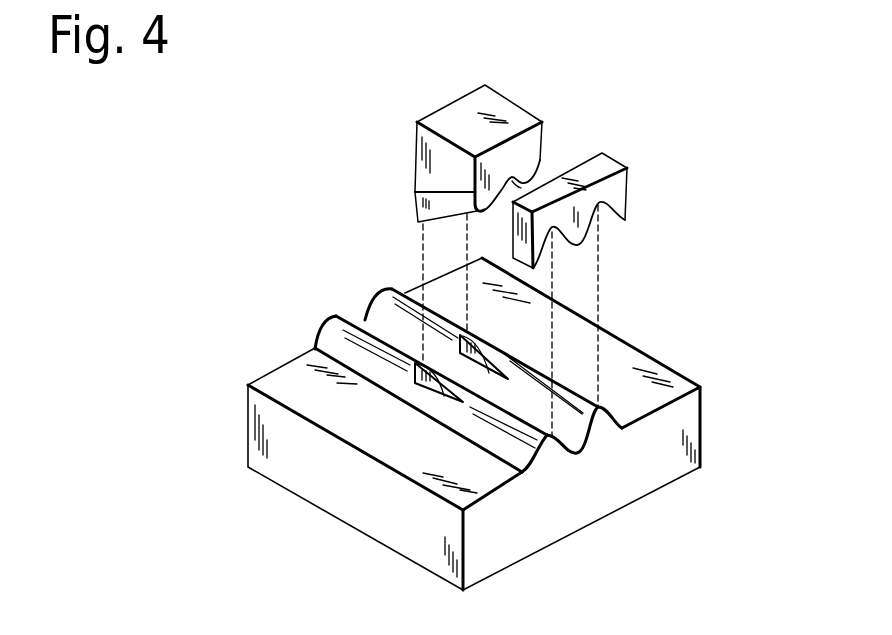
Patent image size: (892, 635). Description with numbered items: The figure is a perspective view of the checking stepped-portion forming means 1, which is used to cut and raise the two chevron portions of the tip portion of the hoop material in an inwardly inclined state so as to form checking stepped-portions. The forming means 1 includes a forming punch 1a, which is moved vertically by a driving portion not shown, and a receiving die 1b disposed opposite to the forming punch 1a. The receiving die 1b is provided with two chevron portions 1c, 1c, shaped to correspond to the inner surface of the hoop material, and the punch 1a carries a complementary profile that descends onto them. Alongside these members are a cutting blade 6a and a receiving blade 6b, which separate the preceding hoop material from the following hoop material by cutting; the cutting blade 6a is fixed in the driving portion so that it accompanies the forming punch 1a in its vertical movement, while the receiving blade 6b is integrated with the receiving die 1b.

The checking stepped-portion forming means 1 is at (392, 152).
The forming punch 1a is at (462, 116).
The receiving die 1b is at (290, 385).
The chevron portions 1c is at (393, 307).
The cutting blade 6a is at (612, 192).
The receiving blade 6b is at (600, 473).